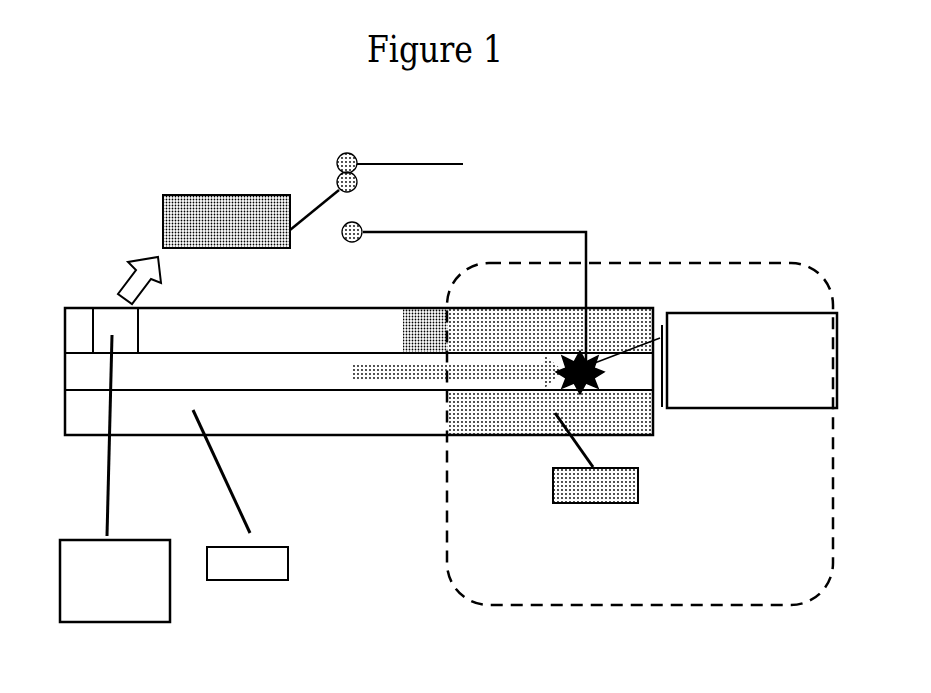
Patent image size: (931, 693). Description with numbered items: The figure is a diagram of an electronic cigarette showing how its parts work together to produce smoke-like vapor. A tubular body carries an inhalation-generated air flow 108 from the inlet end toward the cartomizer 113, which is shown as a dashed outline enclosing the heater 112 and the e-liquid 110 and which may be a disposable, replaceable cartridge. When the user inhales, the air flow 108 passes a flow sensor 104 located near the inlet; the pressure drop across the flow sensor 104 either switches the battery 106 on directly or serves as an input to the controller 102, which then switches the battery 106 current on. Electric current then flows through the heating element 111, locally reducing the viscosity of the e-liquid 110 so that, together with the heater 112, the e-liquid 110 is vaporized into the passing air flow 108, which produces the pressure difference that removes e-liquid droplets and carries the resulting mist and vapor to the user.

The controller 102 is at (163, 231).
The flow sensor 104 is at (75, 622).
The battery 106 is at (247, 580).
The air flow 108 is at (305, 392).
The e-liquid 110 is at (553, 478).
The heating element 111 is at (585, 385).
The heater 112 is at (777, 408).
The cartomizer 113 is at (574, 605).